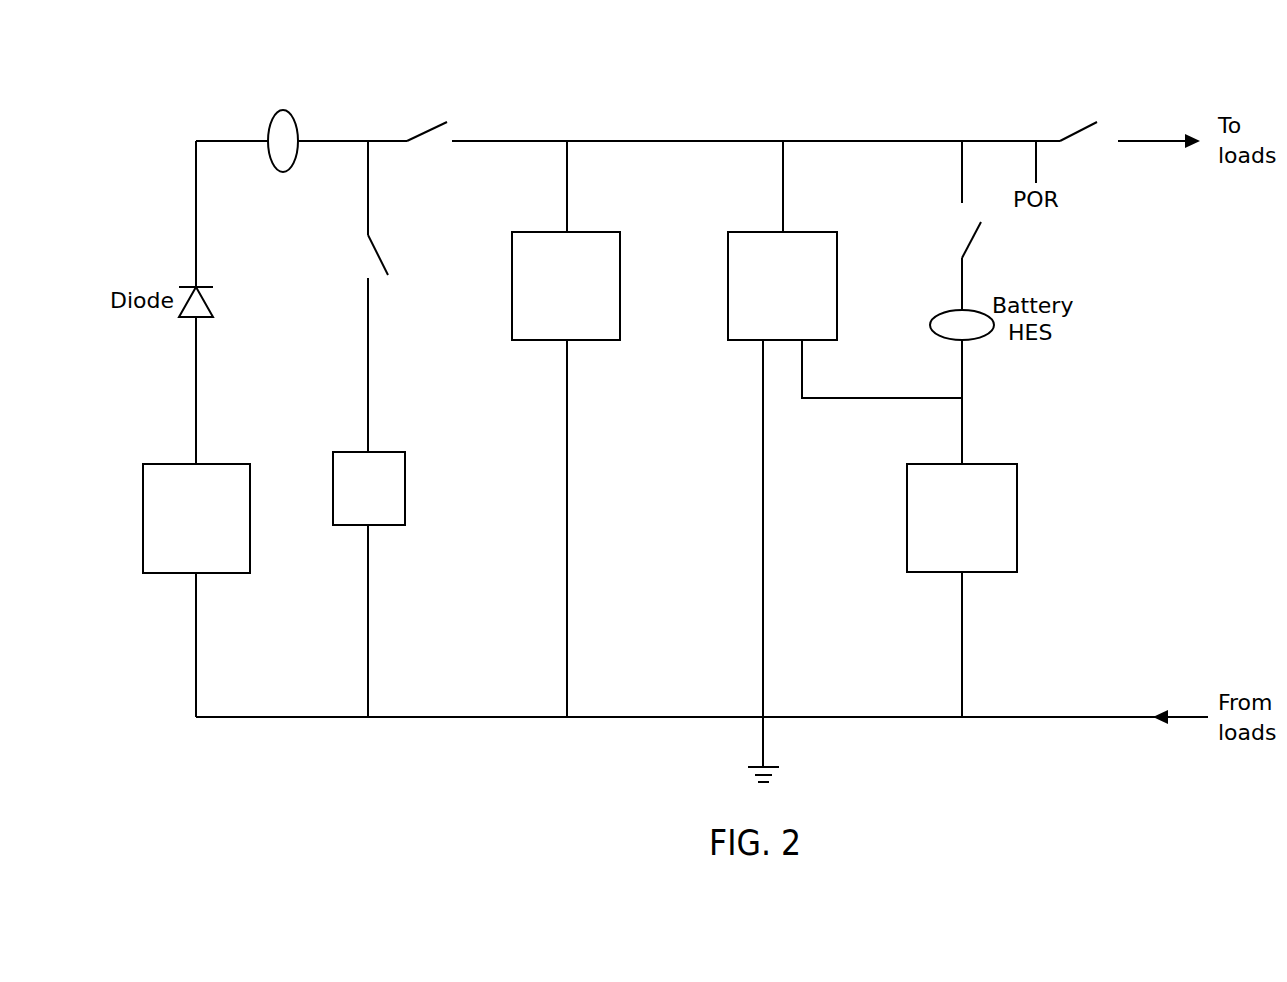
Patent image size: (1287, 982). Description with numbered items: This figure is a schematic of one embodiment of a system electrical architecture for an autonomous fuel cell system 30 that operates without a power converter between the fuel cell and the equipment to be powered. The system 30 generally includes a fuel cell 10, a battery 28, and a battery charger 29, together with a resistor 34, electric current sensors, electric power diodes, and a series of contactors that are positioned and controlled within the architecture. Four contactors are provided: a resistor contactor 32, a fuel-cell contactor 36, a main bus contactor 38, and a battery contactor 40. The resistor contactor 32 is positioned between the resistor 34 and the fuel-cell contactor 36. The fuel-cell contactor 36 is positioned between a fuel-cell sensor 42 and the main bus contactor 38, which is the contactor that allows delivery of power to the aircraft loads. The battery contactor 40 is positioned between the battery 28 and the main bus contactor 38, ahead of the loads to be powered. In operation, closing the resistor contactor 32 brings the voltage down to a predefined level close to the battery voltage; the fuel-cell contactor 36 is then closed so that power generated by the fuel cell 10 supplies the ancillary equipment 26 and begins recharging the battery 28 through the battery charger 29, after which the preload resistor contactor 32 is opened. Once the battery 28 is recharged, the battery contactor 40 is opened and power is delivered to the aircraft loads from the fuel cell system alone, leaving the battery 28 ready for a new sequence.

The fuel cell 10 is at (210, 527).
The ancillary equipment 26 is at (580, 297).
The battery 28 is at (975, 528).
The battery charger 29 is at (796, 297).
The system 30 is at (936, 95).
The resistor contactor 32 is at (367, 258).
The resistor 34 is at (382, 498).
The fuel-cell contactor 36 is at (430, 143).
The main bus contactor 38 is at (1092, 143).
The battery contactor 40 is at (965, 220).
The fuel-cell sensor 42 is at (283, 117).